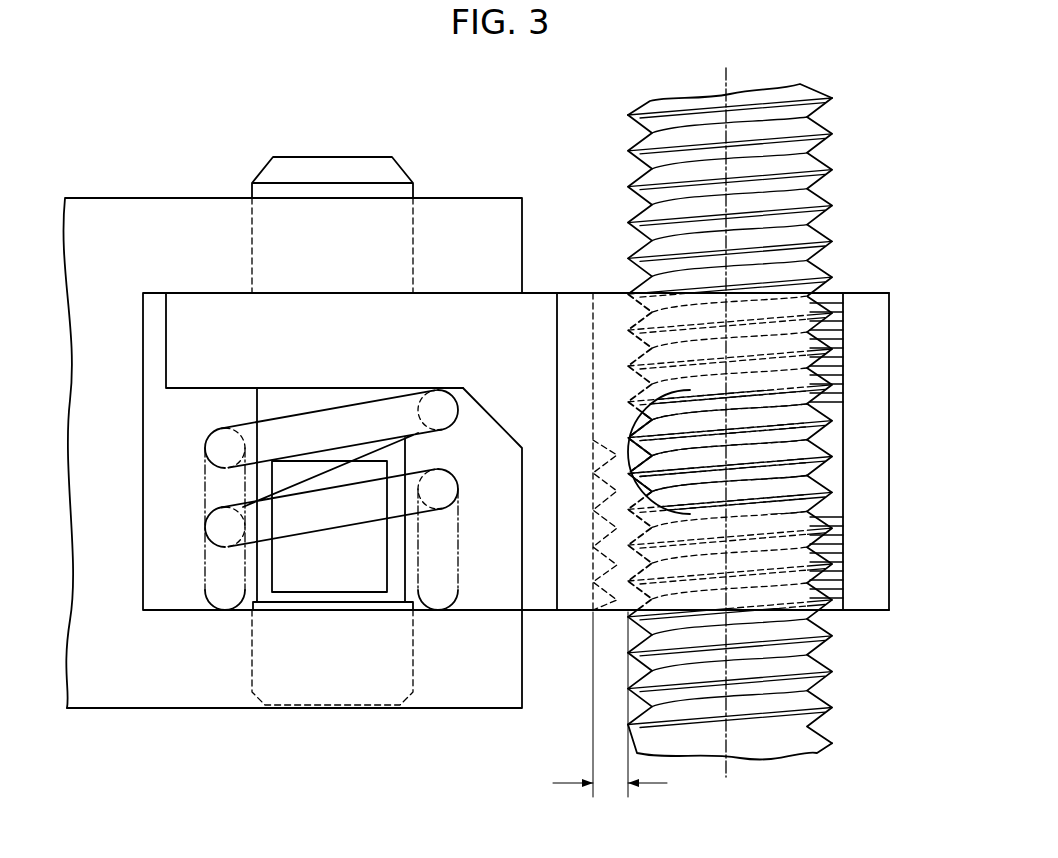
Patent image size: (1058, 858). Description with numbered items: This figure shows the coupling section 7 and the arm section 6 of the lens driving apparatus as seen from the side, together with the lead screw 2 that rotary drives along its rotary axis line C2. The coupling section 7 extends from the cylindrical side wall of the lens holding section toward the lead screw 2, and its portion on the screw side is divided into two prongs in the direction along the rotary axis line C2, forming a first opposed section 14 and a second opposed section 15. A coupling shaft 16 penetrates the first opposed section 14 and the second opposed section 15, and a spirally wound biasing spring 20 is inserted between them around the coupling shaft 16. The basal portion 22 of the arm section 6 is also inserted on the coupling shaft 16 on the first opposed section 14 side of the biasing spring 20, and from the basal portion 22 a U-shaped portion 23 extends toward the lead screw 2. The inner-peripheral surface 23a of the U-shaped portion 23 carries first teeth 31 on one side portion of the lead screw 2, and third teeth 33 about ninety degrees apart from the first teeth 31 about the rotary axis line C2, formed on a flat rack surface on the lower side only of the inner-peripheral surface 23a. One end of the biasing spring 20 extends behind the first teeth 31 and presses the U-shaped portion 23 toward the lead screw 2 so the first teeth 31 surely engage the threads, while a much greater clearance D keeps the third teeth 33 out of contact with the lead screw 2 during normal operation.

The lead screw 2 is at (808, 90).
The arm section 6 is at (850, 540).
The coupling section 7 is at (155, 710).
The first opposed section 14 is at (478, 222).
The second opposed section 15 is at (483, 693).
The coupling shaft 16 is at (371, 178).
The biasing spring 20 is at (268, 528).
The basal portion 22 is at (202, 320).
The U-shaped portion 23 is at (607, 300).
The inner-peripheral surface 23a is at (835, 433).
The first teeth 31 is at (837, 330).
The third teeth 33 is at (583, 608).
The rotary axis line C2 is at (725, 406).
The clearance D is at (610, 716).